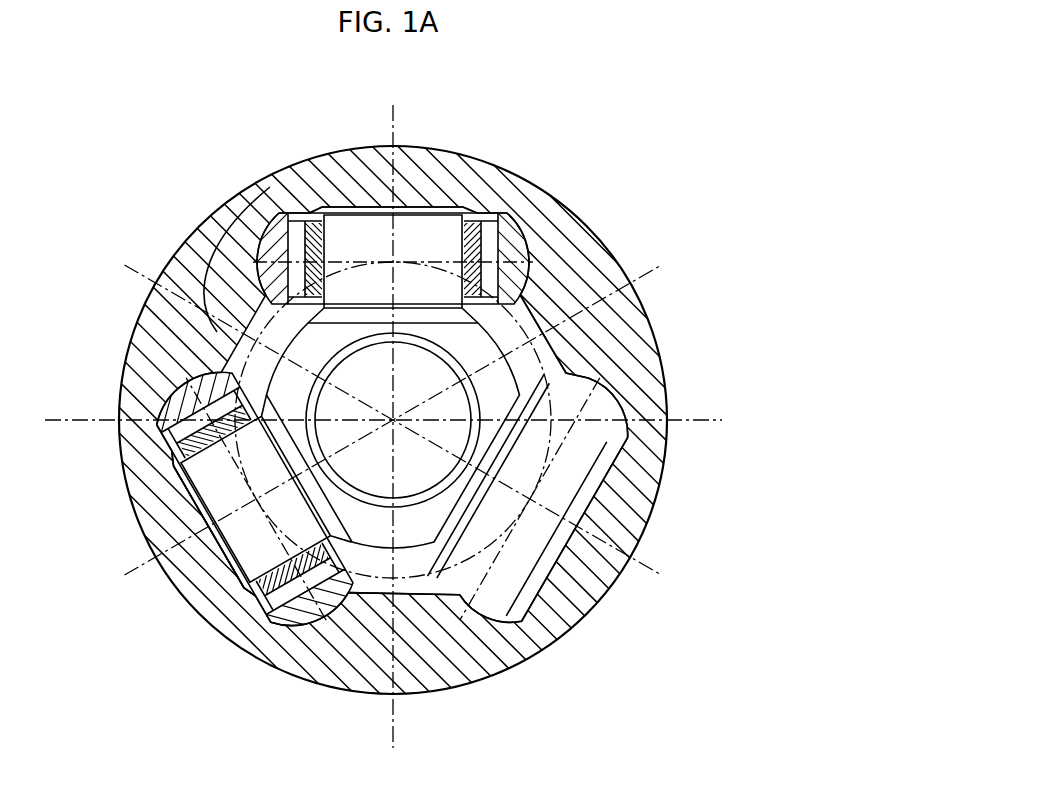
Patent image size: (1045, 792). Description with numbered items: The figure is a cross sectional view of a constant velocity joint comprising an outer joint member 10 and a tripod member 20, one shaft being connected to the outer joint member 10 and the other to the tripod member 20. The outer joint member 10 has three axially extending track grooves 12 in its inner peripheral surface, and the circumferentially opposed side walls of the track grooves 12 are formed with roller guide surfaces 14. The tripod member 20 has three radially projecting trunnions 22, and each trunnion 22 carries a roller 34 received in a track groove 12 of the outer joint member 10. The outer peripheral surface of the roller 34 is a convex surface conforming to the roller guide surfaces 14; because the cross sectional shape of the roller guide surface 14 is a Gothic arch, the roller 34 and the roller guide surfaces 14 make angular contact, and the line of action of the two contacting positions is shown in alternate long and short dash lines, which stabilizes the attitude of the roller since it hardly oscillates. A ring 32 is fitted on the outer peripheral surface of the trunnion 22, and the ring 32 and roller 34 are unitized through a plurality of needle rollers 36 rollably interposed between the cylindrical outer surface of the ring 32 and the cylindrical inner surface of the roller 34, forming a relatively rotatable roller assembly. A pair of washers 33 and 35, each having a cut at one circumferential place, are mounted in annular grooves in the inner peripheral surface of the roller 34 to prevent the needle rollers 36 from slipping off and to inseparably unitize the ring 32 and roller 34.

The outer joint member 10 is at (180, 228).
The track groove 12 is at (413, 205).
The roller guide surface 14 is at (255, 285).
The tripod member 20 is at (500, 378).
The trunnion 22 is at (367, 233).
The ring 32 is at (441, 225).
The washer 33 is at (307, 213).
The roller 34 is at (258, 230).
The washer 35 is at (250, 332).
The needle roller 36 is at (478, 232).